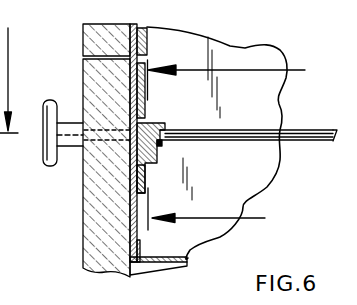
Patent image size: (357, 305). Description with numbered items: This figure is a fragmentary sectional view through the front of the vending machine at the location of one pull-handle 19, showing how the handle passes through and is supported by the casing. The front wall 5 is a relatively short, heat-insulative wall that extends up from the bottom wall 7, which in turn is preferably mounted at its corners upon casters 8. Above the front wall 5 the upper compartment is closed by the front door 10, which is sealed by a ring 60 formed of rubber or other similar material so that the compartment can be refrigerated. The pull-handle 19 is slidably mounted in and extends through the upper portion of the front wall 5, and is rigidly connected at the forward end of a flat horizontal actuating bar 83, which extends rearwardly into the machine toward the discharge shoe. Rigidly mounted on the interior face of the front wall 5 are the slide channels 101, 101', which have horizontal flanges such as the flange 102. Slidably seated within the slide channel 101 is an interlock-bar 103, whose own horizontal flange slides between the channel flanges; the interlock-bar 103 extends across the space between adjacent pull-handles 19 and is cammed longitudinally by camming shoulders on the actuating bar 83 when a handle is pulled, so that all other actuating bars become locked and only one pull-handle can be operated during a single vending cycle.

The front wall 5 is at (110, 242).
The bottom wall 7 is at (233, 145).
The casters 8 is at (9, 70).
The front door 10 is at (95, 36).
The pull-handle 19 is at (44, 164).
The sealing ring 60 is at (140, 24).
The actuating bar 83 is at (302, 133).
The slide channel 101 is at (183, 179).
The slide channel 101' is at (91, 87).
The horizontal flange 102 is at (160, 145).
The interlock-bar 103 is at (138, 157).